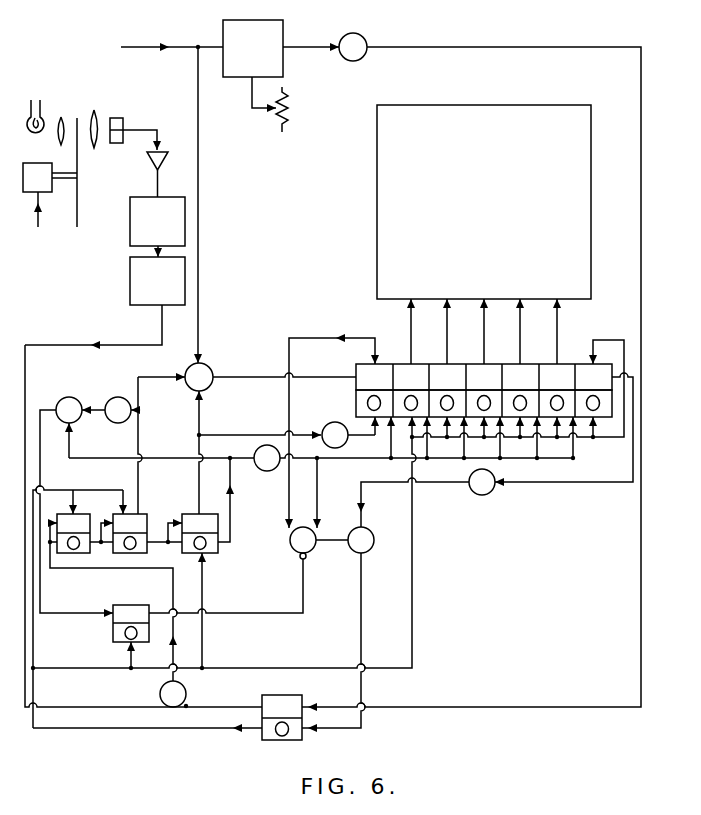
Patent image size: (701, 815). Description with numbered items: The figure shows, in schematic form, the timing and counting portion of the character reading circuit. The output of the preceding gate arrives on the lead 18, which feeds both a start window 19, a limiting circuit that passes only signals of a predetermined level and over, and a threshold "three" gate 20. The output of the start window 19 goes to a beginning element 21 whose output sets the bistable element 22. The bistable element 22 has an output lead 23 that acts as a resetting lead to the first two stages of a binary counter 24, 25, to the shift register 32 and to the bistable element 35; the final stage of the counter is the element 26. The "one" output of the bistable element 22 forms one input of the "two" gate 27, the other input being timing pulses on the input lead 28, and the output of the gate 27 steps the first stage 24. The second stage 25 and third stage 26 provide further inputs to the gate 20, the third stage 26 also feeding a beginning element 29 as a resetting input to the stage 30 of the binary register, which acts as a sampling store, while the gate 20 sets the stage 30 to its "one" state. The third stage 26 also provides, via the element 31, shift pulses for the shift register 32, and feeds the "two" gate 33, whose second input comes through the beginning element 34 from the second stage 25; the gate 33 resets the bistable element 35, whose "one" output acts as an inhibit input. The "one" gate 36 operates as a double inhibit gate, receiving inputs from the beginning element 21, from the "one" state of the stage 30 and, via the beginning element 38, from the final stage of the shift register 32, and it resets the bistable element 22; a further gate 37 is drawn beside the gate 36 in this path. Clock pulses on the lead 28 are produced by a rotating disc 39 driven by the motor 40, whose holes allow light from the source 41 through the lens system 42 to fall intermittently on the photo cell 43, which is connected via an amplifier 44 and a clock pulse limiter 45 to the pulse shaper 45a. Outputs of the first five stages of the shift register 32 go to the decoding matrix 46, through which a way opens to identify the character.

The lead 18 is at (172, 32).
The start window 19 is at (272, 74).
The beginning element 21 is at (379, 38).
The lamp 41 is at (35, 100).
The lens system 42 is at (78, 108).
The photo cell 43 is at (121, 105).
The amplifier 44 is at (169, 164).
The clock pulse limiter 45 is at (186, 221).
The pulse shaper 45a is at (192, 281).
The rotating disc 39 is at (97, 175).
The motor 40 is at (50, 198).
The decoding matrix 46 is at (508, 202).
The threshold "3" gate 20 is at (214, 367).
The stage of binary register 30 is at (467, 366).
The shift register 32 is at (487, 428).
The beginning element 29 is at (327, 420).
The beginning element 31 is at (265, 432).
The "2" gate 33 is at (67, 393).
The beginning element 34 is at (118, 393).
The first stage of binary counter 24 is at (85, 509).
The second stage of binary counter 25 is at (142, 509).
The third stage of binary counter 26 is at (224, 531).
The bistable element 35 is at (117, 609).
The "1" gate 36 is at (288, 555).
The gate 1 37 is at (374, 555).
The beginning element 38 is at (502, 496).
The "2" gate 27 is at (196, 693).
The bistable element 22 is at (304, 708).
The output lead 23 is at (147, 624).
The input lead 28 is at (143, 528).